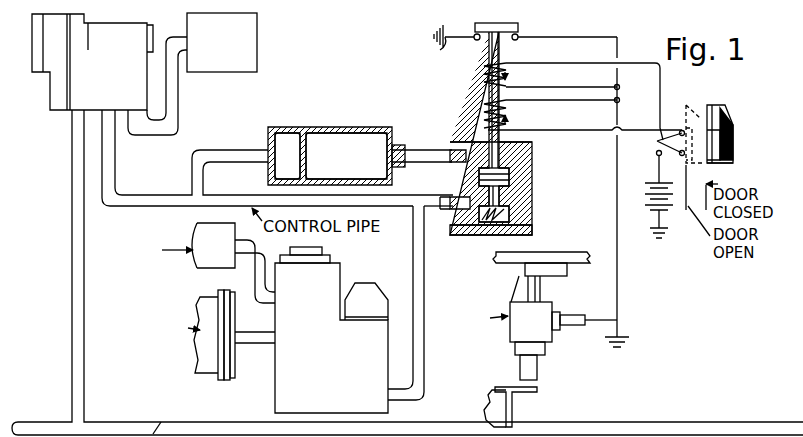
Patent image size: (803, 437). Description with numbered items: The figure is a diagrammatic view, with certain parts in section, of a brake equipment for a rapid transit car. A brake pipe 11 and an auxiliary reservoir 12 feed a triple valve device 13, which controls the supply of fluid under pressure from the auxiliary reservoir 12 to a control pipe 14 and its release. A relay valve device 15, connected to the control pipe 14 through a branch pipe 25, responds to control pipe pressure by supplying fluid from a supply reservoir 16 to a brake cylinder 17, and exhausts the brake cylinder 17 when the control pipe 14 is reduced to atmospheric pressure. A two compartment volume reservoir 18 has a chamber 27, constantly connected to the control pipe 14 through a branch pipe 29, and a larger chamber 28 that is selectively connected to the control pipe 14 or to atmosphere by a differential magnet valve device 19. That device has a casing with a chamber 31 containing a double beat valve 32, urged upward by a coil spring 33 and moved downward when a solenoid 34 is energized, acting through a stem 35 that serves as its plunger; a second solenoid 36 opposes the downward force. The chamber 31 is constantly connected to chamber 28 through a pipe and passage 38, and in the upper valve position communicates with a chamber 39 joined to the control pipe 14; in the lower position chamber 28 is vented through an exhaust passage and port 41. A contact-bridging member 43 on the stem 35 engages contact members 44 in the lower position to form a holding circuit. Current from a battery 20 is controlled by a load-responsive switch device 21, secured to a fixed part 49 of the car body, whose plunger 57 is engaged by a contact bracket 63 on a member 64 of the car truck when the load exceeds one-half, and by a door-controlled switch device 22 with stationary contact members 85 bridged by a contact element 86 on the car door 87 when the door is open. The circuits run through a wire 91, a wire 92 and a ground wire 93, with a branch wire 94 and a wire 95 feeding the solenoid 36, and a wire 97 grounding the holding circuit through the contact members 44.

The brake pipe 11 is at (122, 434).
The auxiliary reservoir 12 is at (257, 44).
The triple valve device 13 is at (55, 111).
The control pipe 14 is at (128, 206).
The relay valve device 15 is at (333, 267).
The supply reservoir 16 is at (200, 228).
The brake cylinder 17 is at (200, 302).
The volume reservoir 18 is at (330, 140).
The differential magnet valve device 19 is at (504, 146).
The battery 20 is at (652, 184).
The load-responsive switch device 21 is at (508, 303).
The door-controlled switch device 22 is at (674, 126).
The branch pipe 25 is at (421, 309).
The chamber 27 is at (285, 150).
The chamber 28 is at (357, 140).
The branch pipe 29 is at (215, 137).
The chamber 31 is at (499, 192).
The double beat valve 32 is at (509, 176).
The coil spring 33 is at (522, 233).
The solenoid 34 is at (490, 78).
The stem 35 is at (490, 127).
The solenoid 36 is at (488, 102).
The pipe and passage 38 is at (415, 150).
The chamber 39 is at (509, 213).
The exhaust passage and port 41 is at (532, 148).
The contact-bridging member 43 is at (518, 30).
The contact members 44 is at (497, 33).
The fixed part of the car body 49 is at (577, 262).
The plunger 57 is at (537, 369).
The contact bracket 63 is at (528, 392).
The member of the car truck 64 is at (489, 406).
The stationary contact members 85 is at (660, 143).
The contact element 86 is at (713, 145).
The car door 87 is at (723, 165).
The wire 91 is at (566, 65).
The wire 92 is at (614, 293).
The wire 93 is at (618, 338).
The branch wire 94 is at (677, 167).
The wire 95 is at (530, 132).
The wire 97 is at (437, 42).